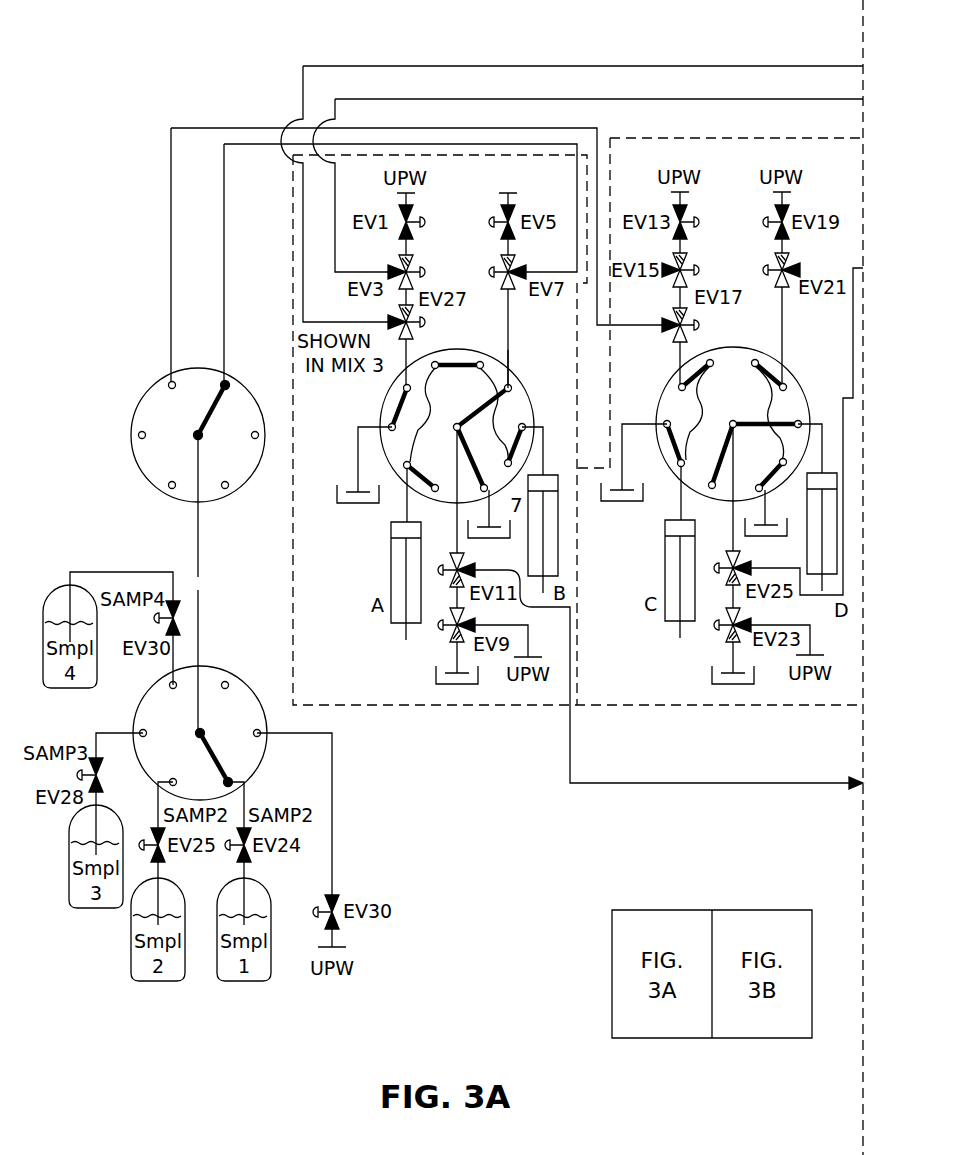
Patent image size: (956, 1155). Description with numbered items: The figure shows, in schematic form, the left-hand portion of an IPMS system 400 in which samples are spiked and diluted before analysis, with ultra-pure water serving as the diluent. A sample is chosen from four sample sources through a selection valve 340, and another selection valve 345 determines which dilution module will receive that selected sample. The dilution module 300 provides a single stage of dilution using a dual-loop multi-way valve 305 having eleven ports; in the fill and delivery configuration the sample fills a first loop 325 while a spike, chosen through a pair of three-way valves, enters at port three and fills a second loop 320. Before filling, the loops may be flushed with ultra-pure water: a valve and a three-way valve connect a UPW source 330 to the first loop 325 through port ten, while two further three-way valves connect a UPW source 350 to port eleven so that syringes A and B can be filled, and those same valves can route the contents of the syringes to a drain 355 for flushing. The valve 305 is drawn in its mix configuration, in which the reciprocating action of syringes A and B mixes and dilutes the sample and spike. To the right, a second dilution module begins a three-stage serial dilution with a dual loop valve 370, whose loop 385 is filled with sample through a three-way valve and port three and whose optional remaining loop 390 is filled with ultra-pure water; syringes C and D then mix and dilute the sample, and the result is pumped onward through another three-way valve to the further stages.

The dilution module 300 is at (292, 557).
The dual-loop multi-way valve 305 is at (531, 362).
The second loop 320 is at (398, 438).
The first loop 325 is at (483, 392).
The UPW source 330 is at (499, 194).
The selection valve 340 is at (252, 683).
The selection valve 345 is at (140, 400).
The UPW source 350 is at (524, 688).
The drain 355 is at (437, 677).
The dual loop valve 370 is at (660, 400).
The loop 385 is at (696, 402).
The loop 390 is at (776, 438).
The IPMS system 400 is at (607, 21).